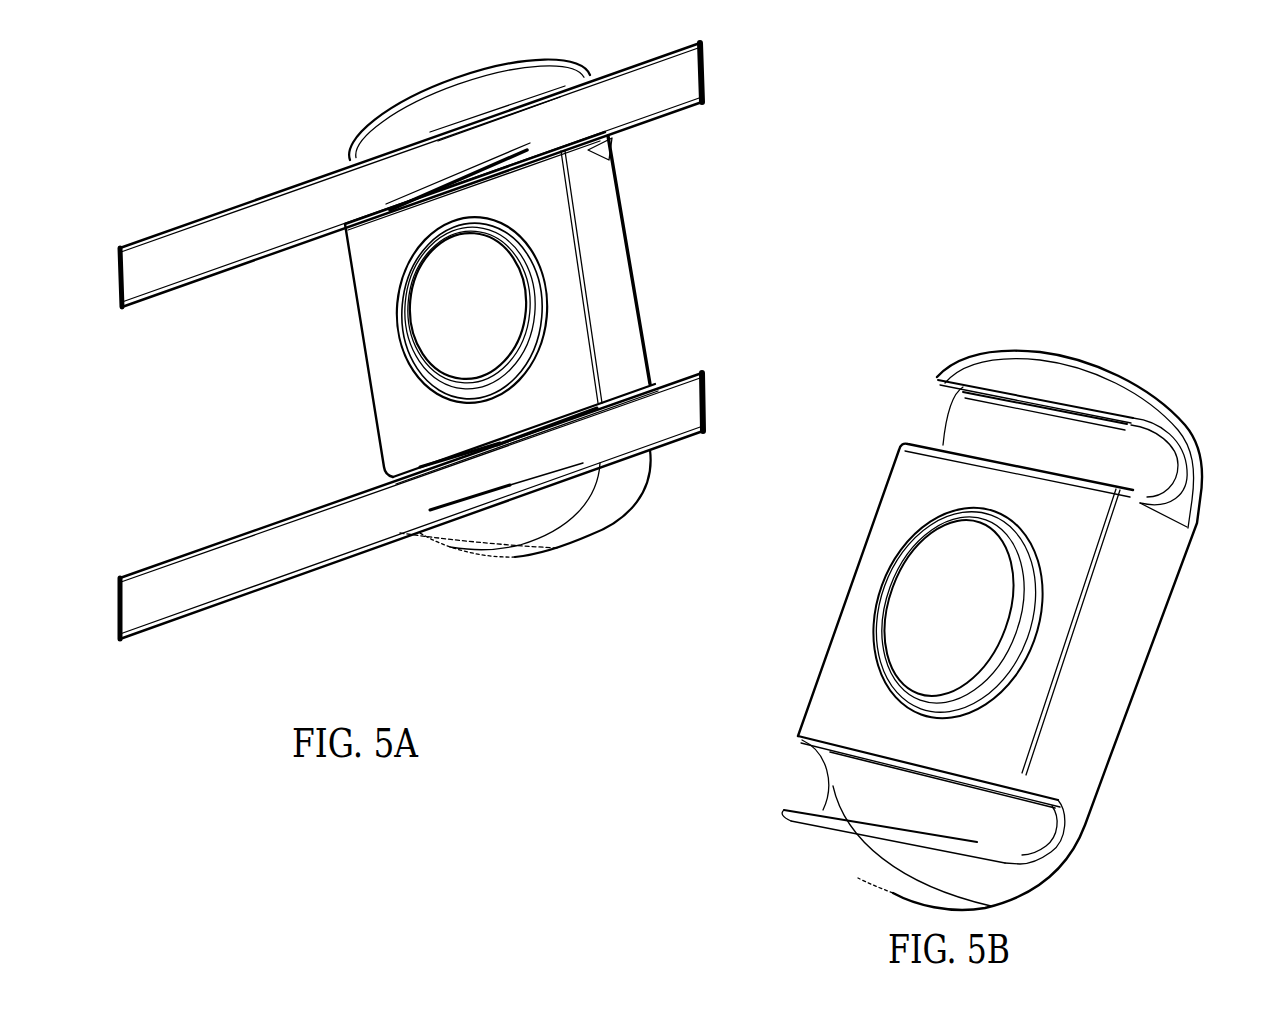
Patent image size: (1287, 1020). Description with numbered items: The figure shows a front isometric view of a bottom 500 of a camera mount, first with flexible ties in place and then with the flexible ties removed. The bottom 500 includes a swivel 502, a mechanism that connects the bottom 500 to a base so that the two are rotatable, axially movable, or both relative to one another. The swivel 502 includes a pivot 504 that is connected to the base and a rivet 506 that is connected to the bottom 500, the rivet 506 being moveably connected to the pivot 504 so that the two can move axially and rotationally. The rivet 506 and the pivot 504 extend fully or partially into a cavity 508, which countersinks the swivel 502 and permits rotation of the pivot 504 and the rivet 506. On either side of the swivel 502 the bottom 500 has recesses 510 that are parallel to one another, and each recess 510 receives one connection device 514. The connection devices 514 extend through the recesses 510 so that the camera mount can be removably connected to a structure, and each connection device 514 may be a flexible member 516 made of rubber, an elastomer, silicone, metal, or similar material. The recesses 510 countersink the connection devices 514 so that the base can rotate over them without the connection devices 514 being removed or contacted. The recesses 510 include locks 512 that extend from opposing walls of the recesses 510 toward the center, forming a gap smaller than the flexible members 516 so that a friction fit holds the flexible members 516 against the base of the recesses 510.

In FIG. 5A, the bottom 500 is at (583, 230).
In FIG. 5B, the bottom 500 is at (840, 693).
In FIG. 5A, the swivel 502 is at (348, 379).
In FIG. 5B, the swivel 502 is at (918, 498).
In FIG. 5A, the pivot 504 is at (410, 325).
In FIG. 5B, the pivot 504 is at (903, 619).
In FIG. 5A, the rivet 506 is at (540, 345).
In FIG. 5B, the rivet 506 is at (888, 378).
In FIG. 5A, the cavity 508 is at (544, 300).
In FIG. 5B, the cavity 508 is at (863, 657).
In FIG. 5A, the recess 510 is at (622, 150).
In FIG. 5B, the recess 510 is at (770, 795).
In FIG. 5A, the lock 512 is at (525, 152).
In FIG. 5B, the lock 512 is at (1050, 470).
In FIG. 5A, the connection device 514 is at (152, 326).
In FIG. 5A, the flexible member 516 is at (190, 230).